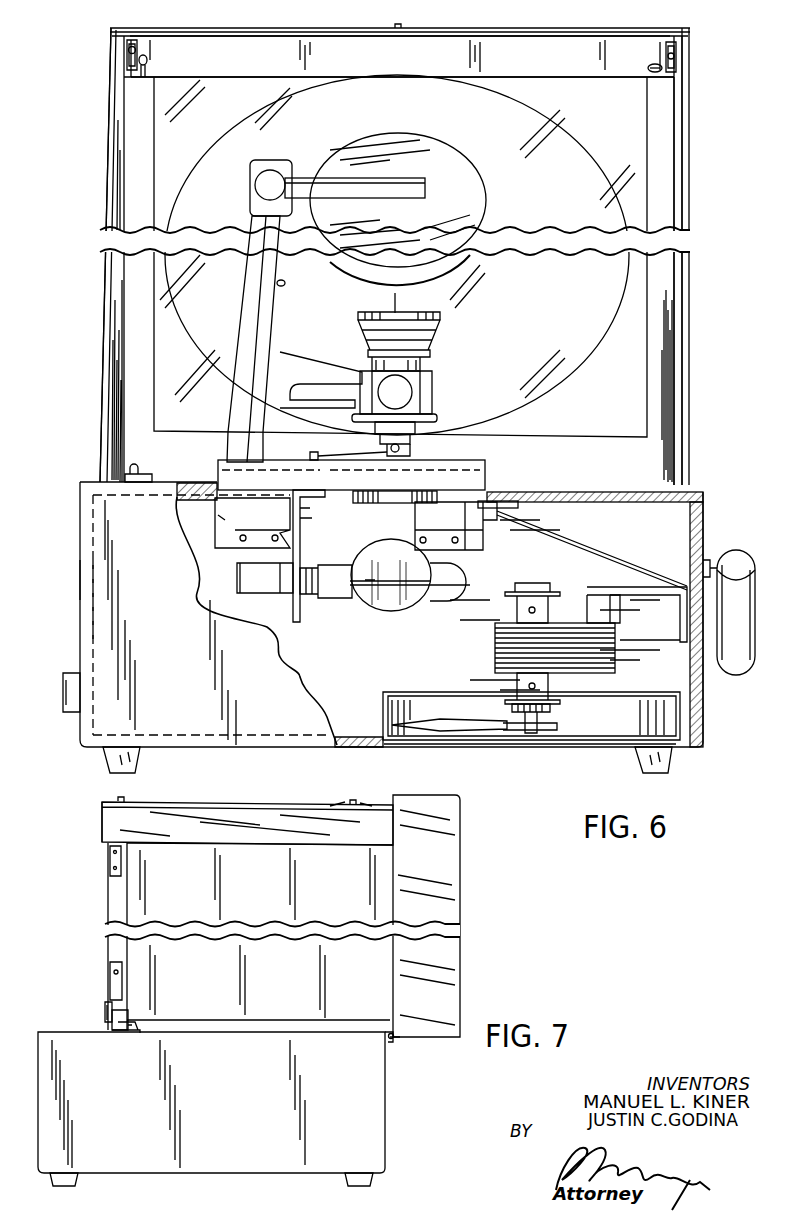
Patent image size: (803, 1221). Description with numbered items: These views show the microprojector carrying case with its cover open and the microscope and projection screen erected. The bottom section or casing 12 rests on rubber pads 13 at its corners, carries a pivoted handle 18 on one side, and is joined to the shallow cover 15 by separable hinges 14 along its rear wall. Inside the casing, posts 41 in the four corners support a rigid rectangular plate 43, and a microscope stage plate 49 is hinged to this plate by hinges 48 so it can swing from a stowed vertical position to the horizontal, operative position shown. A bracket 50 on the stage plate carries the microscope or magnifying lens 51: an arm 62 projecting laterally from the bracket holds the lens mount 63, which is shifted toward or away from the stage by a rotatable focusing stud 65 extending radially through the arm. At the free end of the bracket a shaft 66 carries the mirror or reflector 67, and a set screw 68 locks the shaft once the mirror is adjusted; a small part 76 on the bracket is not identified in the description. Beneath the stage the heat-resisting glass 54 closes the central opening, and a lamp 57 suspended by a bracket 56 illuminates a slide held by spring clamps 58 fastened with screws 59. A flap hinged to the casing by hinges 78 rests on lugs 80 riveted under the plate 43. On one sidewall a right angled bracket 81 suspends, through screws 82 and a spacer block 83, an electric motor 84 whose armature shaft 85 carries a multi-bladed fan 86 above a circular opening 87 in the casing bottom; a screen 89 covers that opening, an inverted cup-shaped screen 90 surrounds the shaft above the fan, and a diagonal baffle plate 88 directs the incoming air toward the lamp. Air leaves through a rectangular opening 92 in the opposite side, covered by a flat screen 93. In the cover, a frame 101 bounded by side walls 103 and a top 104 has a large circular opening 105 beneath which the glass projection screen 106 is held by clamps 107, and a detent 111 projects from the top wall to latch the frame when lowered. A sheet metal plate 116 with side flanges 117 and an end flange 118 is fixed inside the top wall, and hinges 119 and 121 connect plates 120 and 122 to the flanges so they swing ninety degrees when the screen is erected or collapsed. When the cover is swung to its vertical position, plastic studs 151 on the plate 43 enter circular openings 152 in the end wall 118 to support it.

In FIG. 6, the bottom section or casing 12 is at (704, 526).
In FIG. 7, the bottom section or casing 12 is at (378, 1096).
In FIG. 6, the rubber pads 13 is at (62, 694).
In FIG. 7, the rubber pads 13 is at (72, 1178).
In FIG. 6, the separable hinges 14 is at (400, 294).
In FIG. 7, the separable hinges 14 is at (395, 1040).
In FIG. 7, the cover 15 is at (452, 991).
In FIG. 6, the handle 18 is at (755, 616).
In FIG. 6, the posts 41 is at (673, 536).
In FIG. 6, the plate 43 is at (582, 495).
In FIG. 6, the hinges 48 is at (263, 531).
In FIG. 6, the microscope stage plate 49 is at (478, 478).
In FIG. 6, the bracket 50 is at (247, 292).
In FIG. 6, the microscope or magnifying lens 51 is at (434, 341).
In FIG. 6, the heat-resisting glass 54 is at (390, 498).
In FIG. 6, the bracket 56 is at (301, 531).
In FIG. 6, the lamp 57 is at (376, 604).
In FIG. 6, the spring clamps 58 is at (406, 452).
In FIG. 6, the screws 59 is at (316, 455).
In FIG. 6, the arm 62 is at (312, 364).
In FIG. 6, the lens mount 63 is at (433, 371).
In FIG. 6, the focusing stud 65 is at (412, 392).
In FIG. 6, the shaft 66 is at (365, 184).
In FIG. 6, the mirror or reflector 67 is at (472, 182).
In FIG. 6, the set screw 68 is at (255, 185).
In FIG. 6, the stud 76 is at (287, 283).
In FIG. 6, the hinges 78 is at (418, 532).
In FIG. 6, the lugs 80 is at (517, 508).
In FIG. 6, the right angled bracket 81 is at (641, 590).
In FIG. 6, the screws 82 is at (603, 584).
In FIG. 6, the spacer block 83 is at (612, 612).
In FIG. 6, the electric motor 84 is at (615, 648).
In FIG. 6, the armature shaft 85 is at (552, 716).
In FIG. 6, the multi-bladed fan 86 is at (450, 727).
In FIG. 6, the circular opening 87 is at (420, 748).
In FIG. 6, the baffle plate 88 is at (588, 550).
In FIG. 6, the screen 89 is at (468, 744).
In FIG. 6, the inverted cup-shaped screen 90 is at (415, 691).
In FIG. 6, the rectangular opening 92 is at (80, 576).
In FIG. 6, the screen 93 is at (92, 606).
In FIG. 6, the frame 101 is at (665, 346).
In FIG. 6, the side walls 103 is at (112, 95).
In FIG. 7, the side walls 103 is at (243, 814).
In FIG. 6, the top 104 is at (500, 30).
In FIG. 6, the circular opening 105 is at (593, 300).
In FIG. 6, the glass projection screen 106 is at (557, 202).
In FIG. 6, the clamps 107 is at (400, 437).
In FIG. 6, the detent 111 is at (401, 26).
In FIG. 7, the detent 111 is at (104, 830).
In FIG. 7, the sheet metal plate 116 is at (105, 1008).
In FIG. 7, the side flanges 117 is at (108, 902).
In FIG. 6, the end flange 118 is at (247, 50).
In FIG. 6, the hinges 119 is at (140, 45).
In FIG. 6, the sheet metal plate 120 is at (110, 303).
In FIG. 7, the sheet metal plate 120 is at (108, 1016).
In FIG. 6, the hinges 121 is at (665, 48).
In FIG. 7, the hinges 121 is at (108, 860).
In FIG. 6, the sheet metal plate 122 is at (688, 300).
In FIG. 7, the sheet metal plate 122 is at (266, 894).
In FIG. 6, the plastic studs 151 is at (140, 470).
In FIG. 7, the plastic studs 151 is at (127, 1032).
In FIG. 6, the circular openings 152 is at (142, 70).